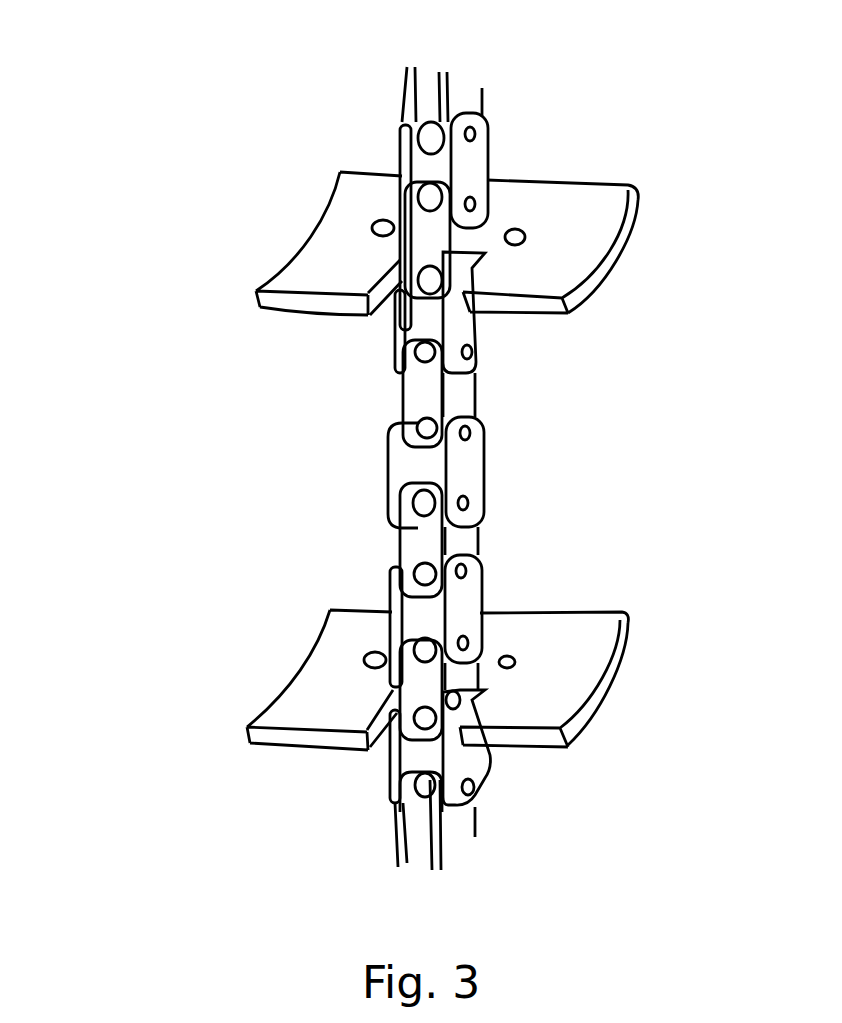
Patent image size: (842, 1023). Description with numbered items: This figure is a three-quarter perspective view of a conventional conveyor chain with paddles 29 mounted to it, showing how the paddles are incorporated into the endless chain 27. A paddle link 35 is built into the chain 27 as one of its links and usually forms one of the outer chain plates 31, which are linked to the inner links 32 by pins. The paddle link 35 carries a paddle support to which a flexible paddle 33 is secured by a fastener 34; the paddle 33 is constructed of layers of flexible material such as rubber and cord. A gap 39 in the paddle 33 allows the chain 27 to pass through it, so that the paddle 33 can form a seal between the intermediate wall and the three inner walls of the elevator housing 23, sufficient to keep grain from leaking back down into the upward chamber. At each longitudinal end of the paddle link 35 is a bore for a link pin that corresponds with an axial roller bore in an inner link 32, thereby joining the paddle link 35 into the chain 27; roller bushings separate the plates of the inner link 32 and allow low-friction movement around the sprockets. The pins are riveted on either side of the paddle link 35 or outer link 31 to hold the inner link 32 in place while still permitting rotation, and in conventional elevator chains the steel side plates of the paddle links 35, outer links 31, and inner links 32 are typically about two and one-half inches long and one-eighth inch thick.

The elevator housing 23 is at (508, 655).
The endless chain 27 is at (520, 470).
The paddles 29 is at (258, 192).
The outer chain plate 31 is at (400, 473).
The inner link 32 is at (413, 398).
The flexible paddle 33 is at (597, 205).
The fastener 34 is at (517, 226).
The paddle link 35 is at (478, 332).
The gap 39 is at (390, 730).